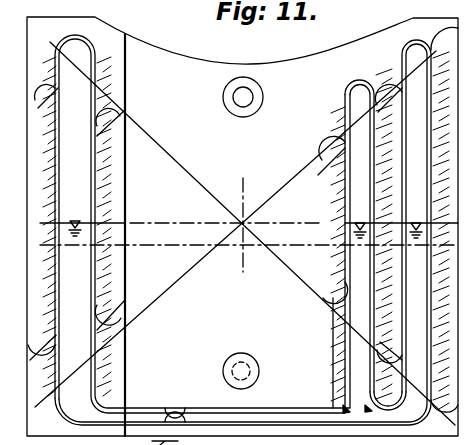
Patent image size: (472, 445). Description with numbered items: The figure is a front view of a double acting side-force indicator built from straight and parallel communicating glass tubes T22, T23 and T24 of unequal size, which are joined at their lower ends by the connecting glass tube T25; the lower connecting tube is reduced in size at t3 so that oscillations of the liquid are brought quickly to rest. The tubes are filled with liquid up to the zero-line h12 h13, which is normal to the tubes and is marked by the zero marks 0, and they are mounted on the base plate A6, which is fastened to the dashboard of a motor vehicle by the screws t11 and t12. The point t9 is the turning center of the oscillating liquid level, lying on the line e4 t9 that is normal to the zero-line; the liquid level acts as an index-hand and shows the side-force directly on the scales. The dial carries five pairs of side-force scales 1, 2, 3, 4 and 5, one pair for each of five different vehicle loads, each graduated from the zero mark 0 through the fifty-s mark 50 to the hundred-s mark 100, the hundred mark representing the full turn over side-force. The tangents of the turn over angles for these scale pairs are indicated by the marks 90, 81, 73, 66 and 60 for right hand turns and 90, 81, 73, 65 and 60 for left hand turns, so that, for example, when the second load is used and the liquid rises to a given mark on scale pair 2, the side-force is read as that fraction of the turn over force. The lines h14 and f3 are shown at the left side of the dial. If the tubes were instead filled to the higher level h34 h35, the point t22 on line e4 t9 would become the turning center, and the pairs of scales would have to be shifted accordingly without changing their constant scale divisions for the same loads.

The zero-line end point h12 is at (48, 45).
The communicating glass tube T23 is at (352, 98).
The communicating glass tube T24 is at (408, 57).
The communicating glass tube T22 is at (87, 60).
The connecting glass tube T25 is at (268, 412).
The reduced portion of the lower connecting tube t3 is at (172, 410).
The turning center of the oscillating liquid level t9 is at (243, 218).
The screw t11 is at (256, 364).
The screw t12 is at (256, 105).
The alternative turning center t22 is at (243, 245).
The base plate A6 is at (188, 68).
The zero-line end point h13 is at (434, 223).
The level h14 is at (53, 200).
The alternative liquid level end point h34 is at (140, 245).
The alternative liquid level end point h35 is at (298, 246).
The normal line end point e4 is at (255, 285).
The frame corner f3 is at (50, 400).
The zero mark 0 is at (239, 223).
The fifty-s scale mark 50 is at (243, 224).
The hundred-s scale mark 100 is at (450, 38).
The turn over tangent mark 0. 60 is at (33, 224).
The turn over tangent mark 0. 66 is at (129, 147).
The turn over tangent mark 0. 65 is at (129, 295).
The turn over tangent mark 0. 73 is at (305, 171).
The turn over tangent mark 0. 81 is at (373, 323).
The turn over tangent mark 0. 90 is at (423, 399).
The side-force scale pair 1 is at (435, 429).
The side-force scale pair 2 is at (383, 365).
The side-force scale pair 3 is at (323, 311).
The side-force scale pair 4 is at (106, 339).
The side-force scale pair 5 is at (41, 367).